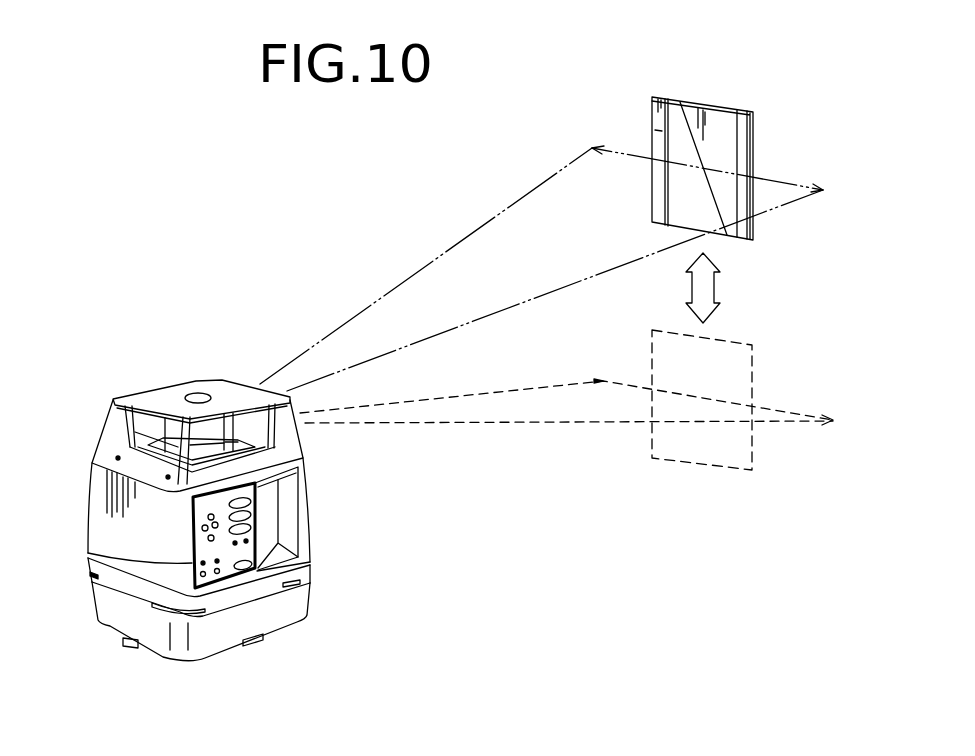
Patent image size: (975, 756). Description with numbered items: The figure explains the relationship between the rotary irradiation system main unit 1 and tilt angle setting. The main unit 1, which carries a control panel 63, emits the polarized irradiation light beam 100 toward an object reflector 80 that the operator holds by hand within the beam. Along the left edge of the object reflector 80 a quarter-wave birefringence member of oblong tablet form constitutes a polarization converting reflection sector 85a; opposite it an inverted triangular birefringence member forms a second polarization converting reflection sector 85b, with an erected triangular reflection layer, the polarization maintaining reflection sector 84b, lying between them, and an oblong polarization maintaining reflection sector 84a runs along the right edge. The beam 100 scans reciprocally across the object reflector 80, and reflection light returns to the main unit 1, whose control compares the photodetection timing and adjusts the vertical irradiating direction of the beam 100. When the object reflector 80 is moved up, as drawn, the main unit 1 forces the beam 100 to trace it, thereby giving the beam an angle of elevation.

The rotary irradiation system main unit 1 is at (228, 520).
The control panel 63 is at (90, 543).
The object reflector 80 is at (690, 249).
The polarization maintaining reflection sector 84a is at (742, 146).
The polarization maintaining reflection sector 84b is at (688, 212).
The polarization converting reflection sector 85a is at (653, 125).
The polarization converting reflection sector 85b is at (713, 123).
The polarized irradiation light beam 100 is at (477, 227).